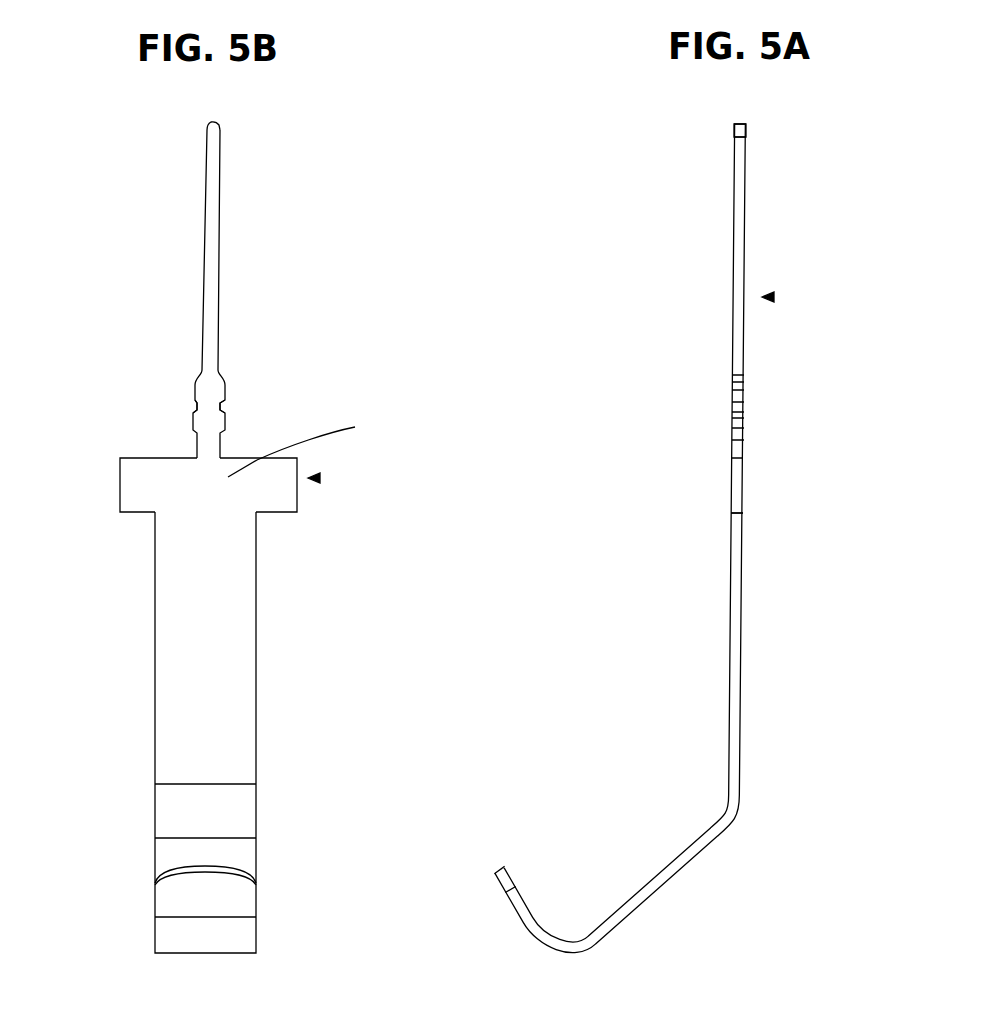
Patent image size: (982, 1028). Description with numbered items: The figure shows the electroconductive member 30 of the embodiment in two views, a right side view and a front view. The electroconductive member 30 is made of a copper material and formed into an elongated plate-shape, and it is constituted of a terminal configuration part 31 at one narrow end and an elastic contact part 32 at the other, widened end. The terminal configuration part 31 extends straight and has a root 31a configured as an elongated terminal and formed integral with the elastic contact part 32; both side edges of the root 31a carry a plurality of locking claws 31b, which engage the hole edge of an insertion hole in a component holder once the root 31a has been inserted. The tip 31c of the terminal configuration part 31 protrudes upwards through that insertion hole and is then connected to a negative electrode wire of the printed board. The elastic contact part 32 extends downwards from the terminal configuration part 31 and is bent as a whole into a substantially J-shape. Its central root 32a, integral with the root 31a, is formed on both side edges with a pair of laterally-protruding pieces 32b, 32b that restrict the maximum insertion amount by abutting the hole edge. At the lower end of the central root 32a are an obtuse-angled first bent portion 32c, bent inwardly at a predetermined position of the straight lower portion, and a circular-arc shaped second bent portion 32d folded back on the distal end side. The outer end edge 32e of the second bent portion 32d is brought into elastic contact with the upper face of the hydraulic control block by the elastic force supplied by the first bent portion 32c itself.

In FIG. 5B, the electroconductive member 30 is at (318, 478).
In FIG. 5A, the electroconductive member 30 is at (772, 297).
In FIG. 5B, the terminal configuration part 31 is at (219, 224).
In FIG. 5A, the terminal configuration part 31 is at (747, 215).
In FIG. 5B, the root 31a is at (217, 388).
In FIG. 5A, the root 31a is at (745, 410).
In FIG. 5B, the locking claws 31b is at (195, 410).
In FIG. 5A, the locking claws 31b is at (745, 385).
In FIG. 5B, the tip 31c is at (215, 130).
In FIG. 5A, the tip 31c is at (733, 133).
In FIG. 5B, the elastic contact part 32 is at (256, 662).
In FIG. 5A, the elastic contact part 32 is at (740, 642).
In FIG. 5B, the central root 32a is at (310, 444).
In FIG. 5A, the central root 32a is at (745, 490).
In FIG. 5B, the laterally-protruding pieces 32b is at (137, 482).
In FIG. 5B, the first bent portion 32c is at (243, 812).
In FIG. 5A, the first bent portion 32c is at (740, 795).
In FIG. 5B, the second bent portion 32d is at (202, 895).
In FIG. 5A, the second bent portion 32d is at (507, 912).
In FIG. 5B, the outer end edge 32e is at (187, 937).
In FIG. 5A, the outer end edge 32e is at (583, 952).